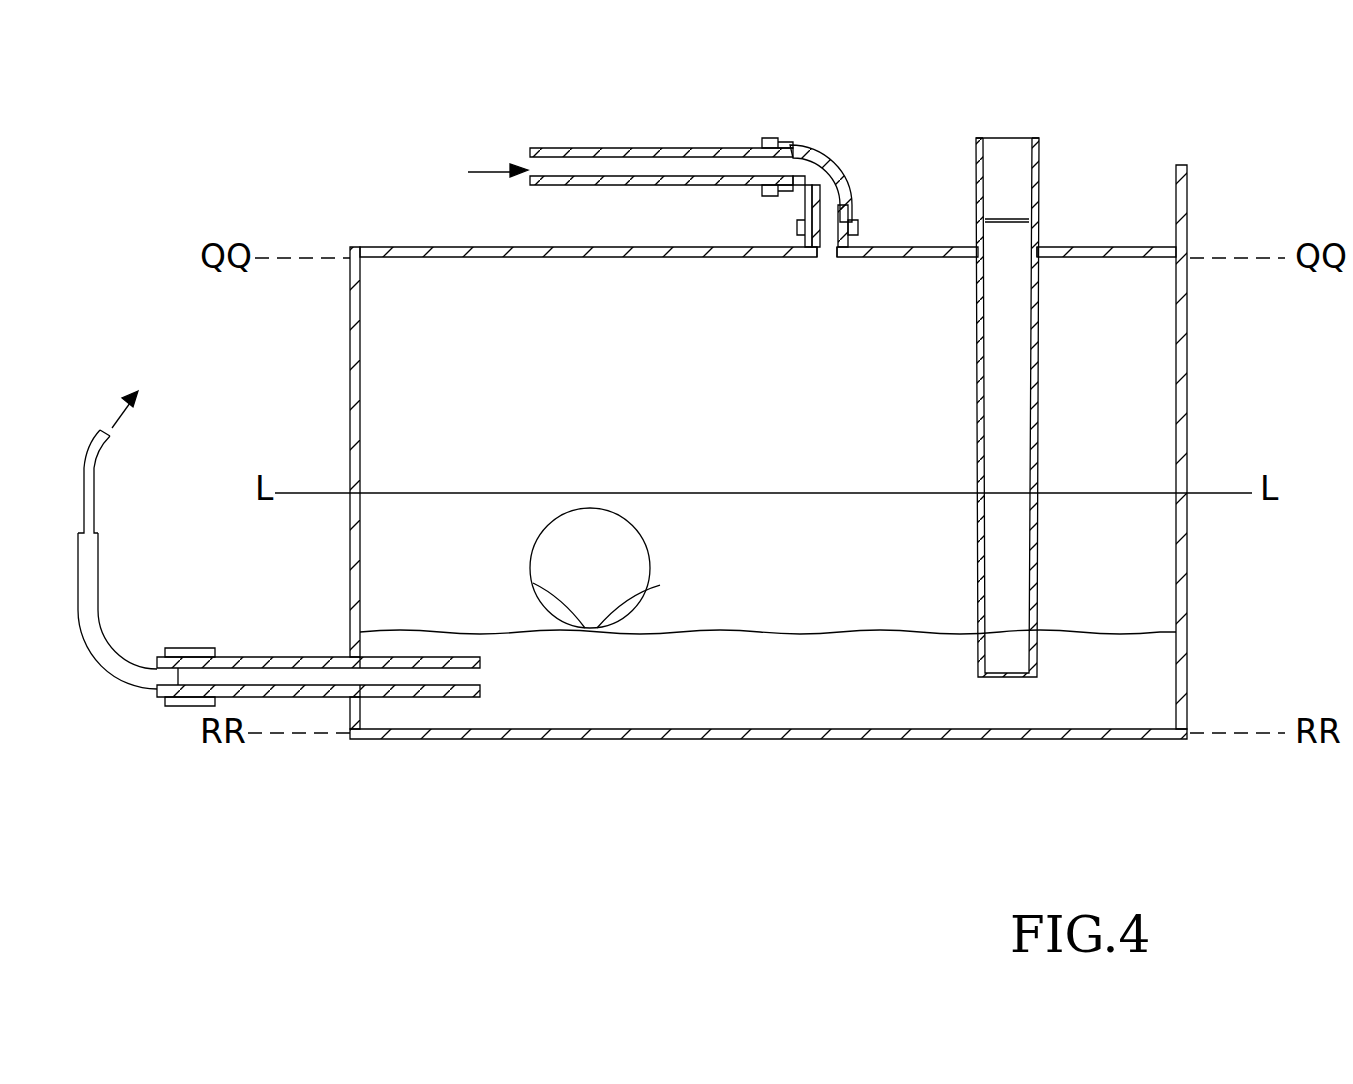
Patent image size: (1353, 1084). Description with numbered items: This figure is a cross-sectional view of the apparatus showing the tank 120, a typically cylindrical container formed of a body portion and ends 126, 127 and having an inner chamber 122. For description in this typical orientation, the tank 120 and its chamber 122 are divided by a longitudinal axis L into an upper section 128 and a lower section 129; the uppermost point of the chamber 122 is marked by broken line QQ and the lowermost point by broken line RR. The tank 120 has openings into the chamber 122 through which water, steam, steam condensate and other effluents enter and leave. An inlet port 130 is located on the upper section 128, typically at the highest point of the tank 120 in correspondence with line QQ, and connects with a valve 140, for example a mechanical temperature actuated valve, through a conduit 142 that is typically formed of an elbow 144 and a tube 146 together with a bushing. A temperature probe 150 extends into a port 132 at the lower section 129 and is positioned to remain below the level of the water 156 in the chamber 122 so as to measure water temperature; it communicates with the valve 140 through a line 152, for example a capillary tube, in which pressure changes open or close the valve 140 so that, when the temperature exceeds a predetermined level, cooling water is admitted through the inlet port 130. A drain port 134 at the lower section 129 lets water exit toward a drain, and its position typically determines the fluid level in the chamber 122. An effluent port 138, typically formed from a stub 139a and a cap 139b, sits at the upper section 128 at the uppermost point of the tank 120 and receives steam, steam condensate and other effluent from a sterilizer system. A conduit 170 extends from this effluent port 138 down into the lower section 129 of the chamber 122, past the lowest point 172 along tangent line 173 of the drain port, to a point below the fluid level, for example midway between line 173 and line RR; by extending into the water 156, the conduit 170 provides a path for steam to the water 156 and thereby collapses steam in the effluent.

The tank 120 is at (763, 506).
The inner chamber 122 is at (662, 375).
The end 126 is at (350, 510).
The end 127 is at (1190, 580).
The upper section 128 is at (400, 410).
The lower section 129 is at (385, 553).
The inlet port 130 is at (827, 262).
The port 132 is at (368, 698).
The drain port 134 is at (622, 562).
The effluent port 138 is at (1008, 232).
The stub 139a is at (1043, 238).
The cap 139b is at (1036, 143).
The valve 140 is at (296, 280).
The conduit 142 is at (543, 130).
The elbow 144 is at (848, 165).
The tube 146 is at (600, 148).
The temperature probe 150 is at (270, 632).
The line 152 is at (100, 552).
The water 156 is at (712, 693).
The conduit 170 is at (1037, 363).
The lowest point 172 is at (533, 583).
The tangent line 173 is at (660, 585).